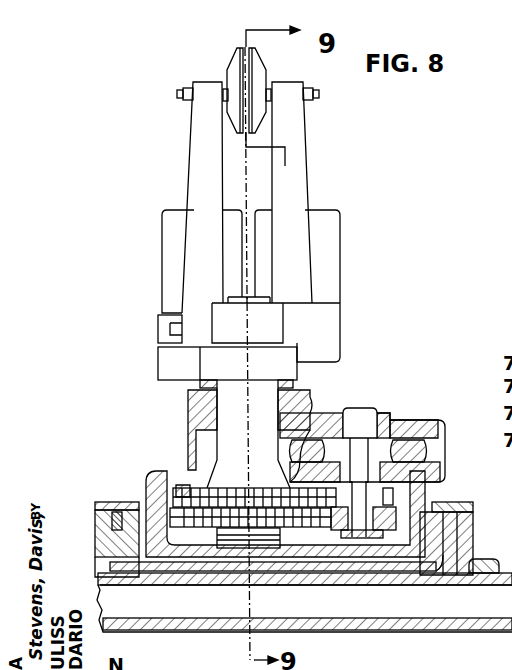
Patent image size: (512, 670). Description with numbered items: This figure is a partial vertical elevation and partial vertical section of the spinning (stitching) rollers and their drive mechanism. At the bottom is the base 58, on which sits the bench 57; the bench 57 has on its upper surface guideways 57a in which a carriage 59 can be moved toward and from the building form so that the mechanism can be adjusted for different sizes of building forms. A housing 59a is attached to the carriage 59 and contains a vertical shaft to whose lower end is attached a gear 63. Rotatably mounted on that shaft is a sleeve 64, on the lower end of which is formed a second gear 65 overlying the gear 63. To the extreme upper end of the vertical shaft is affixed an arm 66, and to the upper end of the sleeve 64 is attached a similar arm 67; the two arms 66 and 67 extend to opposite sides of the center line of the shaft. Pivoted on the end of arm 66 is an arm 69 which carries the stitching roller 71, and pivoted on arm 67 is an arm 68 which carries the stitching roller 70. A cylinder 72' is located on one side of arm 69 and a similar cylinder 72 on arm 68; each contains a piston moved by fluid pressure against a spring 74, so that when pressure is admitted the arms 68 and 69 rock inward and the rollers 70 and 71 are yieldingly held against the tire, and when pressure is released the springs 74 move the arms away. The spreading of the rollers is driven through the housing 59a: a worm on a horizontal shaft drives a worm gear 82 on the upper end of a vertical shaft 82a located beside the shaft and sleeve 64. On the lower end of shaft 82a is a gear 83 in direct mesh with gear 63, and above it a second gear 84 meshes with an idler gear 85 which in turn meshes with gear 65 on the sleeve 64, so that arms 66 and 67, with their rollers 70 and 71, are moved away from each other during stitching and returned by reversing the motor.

The stitching roller 70 is at (237, 65).
The stitching roller 71 is at (262, 64).
The arm 68 is at (203, 150).
The arm 69 is at (290, 138).
The cylinder 72 is at (155, 275).
The cylinder 72' is at (341, 285).
The arm 66 is at (332, 315).
The arm 67 is at (170, 363).
The sleeve 64 is at (227, 405).
The second gear 65 is at (182, 493).
The carriage 59 is at (148, 512).
The housing 59a is at (307, 393).
The bench 57 is at (456, 522).
The guideways 57a is at (97, 502).
The base 58 is at (490, 541).
The idler gear 85 is at (280, 480).
The gear 63 is at (203, 520).
The gear 83 is at (341, 525).
The worm gear 82 is at (404, 447).
The vertical shaft 82a is at (360, 440).
The second gear 84 is at (393, 490).
The spring 74 is at (504, 460).